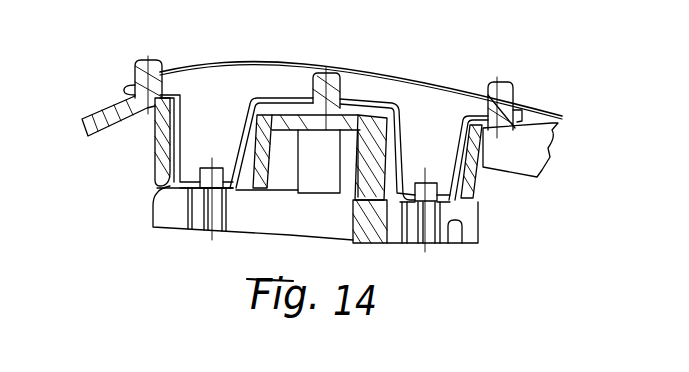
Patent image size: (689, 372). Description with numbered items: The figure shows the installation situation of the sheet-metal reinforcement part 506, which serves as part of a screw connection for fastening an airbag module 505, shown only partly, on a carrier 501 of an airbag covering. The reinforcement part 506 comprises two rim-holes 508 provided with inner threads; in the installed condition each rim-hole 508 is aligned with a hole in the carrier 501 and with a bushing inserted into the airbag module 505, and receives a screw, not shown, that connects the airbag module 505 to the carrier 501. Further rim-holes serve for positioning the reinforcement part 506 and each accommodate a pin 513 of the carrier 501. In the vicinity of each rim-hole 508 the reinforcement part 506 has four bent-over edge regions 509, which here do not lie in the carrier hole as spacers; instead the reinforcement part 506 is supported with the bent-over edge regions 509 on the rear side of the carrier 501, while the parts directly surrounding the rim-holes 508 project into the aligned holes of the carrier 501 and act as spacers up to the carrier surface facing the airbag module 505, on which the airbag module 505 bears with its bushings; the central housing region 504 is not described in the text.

The carrier 501 is at (364, 143).
The central housing box 504 is at (245, 170).
The airbag module 505 is at (167, 208).
The reinforcement part 506 is at (458, 145).
The rim-hole 508 is at (200, 168).
The bent-over edge region 509 is at (172, 168).
The pin 513 is at (140, 63).